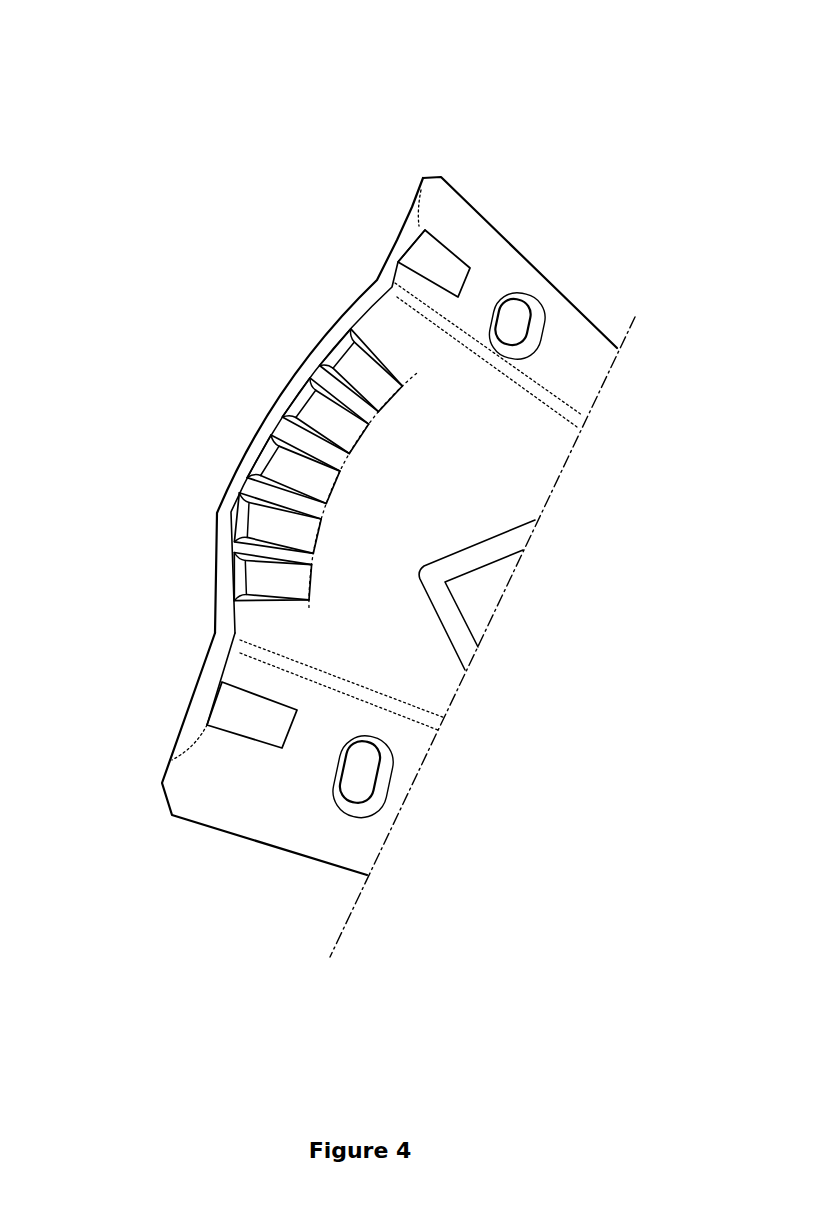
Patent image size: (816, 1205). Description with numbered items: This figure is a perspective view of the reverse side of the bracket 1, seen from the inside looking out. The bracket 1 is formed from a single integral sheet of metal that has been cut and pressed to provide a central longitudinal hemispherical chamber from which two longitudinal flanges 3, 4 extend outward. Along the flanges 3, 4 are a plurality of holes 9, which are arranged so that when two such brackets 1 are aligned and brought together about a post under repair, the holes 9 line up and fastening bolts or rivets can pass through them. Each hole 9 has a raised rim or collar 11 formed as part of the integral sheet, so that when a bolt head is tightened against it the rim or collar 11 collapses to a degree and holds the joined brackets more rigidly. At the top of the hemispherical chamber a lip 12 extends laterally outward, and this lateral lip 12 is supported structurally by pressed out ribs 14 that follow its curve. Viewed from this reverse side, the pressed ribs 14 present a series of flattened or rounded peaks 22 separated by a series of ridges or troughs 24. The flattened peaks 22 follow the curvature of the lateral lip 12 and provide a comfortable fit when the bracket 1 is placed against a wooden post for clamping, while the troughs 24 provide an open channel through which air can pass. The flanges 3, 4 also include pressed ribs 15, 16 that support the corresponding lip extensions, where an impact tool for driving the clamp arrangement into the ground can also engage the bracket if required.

The bracket 1 is at (586, 123).
The flange 3 is at (248, 808).
The flange 4 is at (492, 277).
The hole 9 is at (532, 293).
The raised rim or collar 11 is at (532, 322).
The lip 12 is at (263, 412).
The pressed out ribs 14 is at (383, 434).
The pressed rib 15 is at (418, 228).
The pressed rib 16 is at (217, 737).
The flattened or rounded peaks 22 is at (357, 360).
The ridges or troughs 24 is at (323, 380).